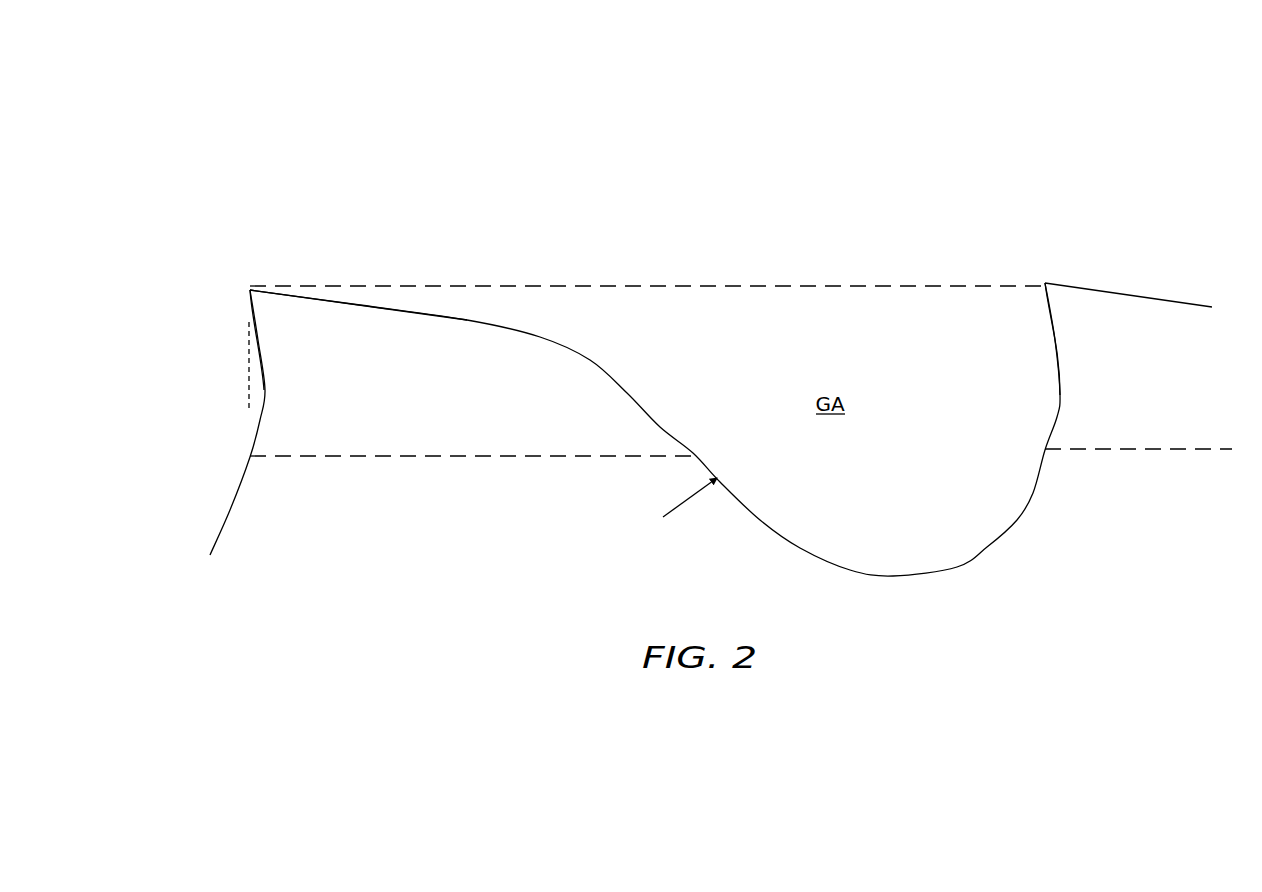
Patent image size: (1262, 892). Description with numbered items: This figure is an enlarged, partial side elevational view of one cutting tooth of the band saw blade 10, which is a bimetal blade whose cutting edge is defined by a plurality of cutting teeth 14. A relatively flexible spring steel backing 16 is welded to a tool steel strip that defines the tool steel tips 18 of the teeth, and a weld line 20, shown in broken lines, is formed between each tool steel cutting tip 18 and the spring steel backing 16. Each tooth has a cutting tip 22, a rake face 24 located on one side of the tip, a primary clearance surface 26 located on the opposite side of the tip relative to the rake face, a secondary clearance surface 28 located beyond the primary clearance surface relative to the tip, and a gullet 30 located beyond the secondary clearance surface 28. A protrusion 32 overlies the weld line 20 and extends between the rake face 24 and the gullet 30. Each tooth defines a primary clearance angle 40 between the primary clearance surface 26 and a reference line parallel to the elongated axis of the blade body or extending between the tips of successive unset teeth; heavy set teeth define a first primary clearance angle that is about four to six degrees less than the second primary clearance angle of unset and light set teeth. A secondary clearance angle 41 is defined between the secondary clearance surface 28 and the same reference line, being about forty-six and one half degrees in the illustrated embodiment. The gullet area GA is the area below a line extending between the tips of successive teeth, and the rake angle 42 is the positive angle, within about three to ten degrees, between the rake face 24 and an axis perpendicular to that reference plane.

The band saw blade 10 is at (772, 130).
The cutting teeth 14 is at (337, 300).
The spring steel backing 16 is at (437, 504).
The tool steel tips 18 is at (530, 382).
The weld line 20 is at (373, 460).
The cutting tip 22 is at (248, 290).
The rake face 24 is at (256, 325).
The primary clearance surface 26 is at (465, 318).
The secondary clearance surface 28 is at (692, 445).
The gullet 30 is at (900, 575).
The protrusion 32 is at (250, 456).
The primary clearance angle 40 is at (404, 248).
The secondary clearance angle 41 is at (802, 280).
The rake angle 42 is at (300, 348).